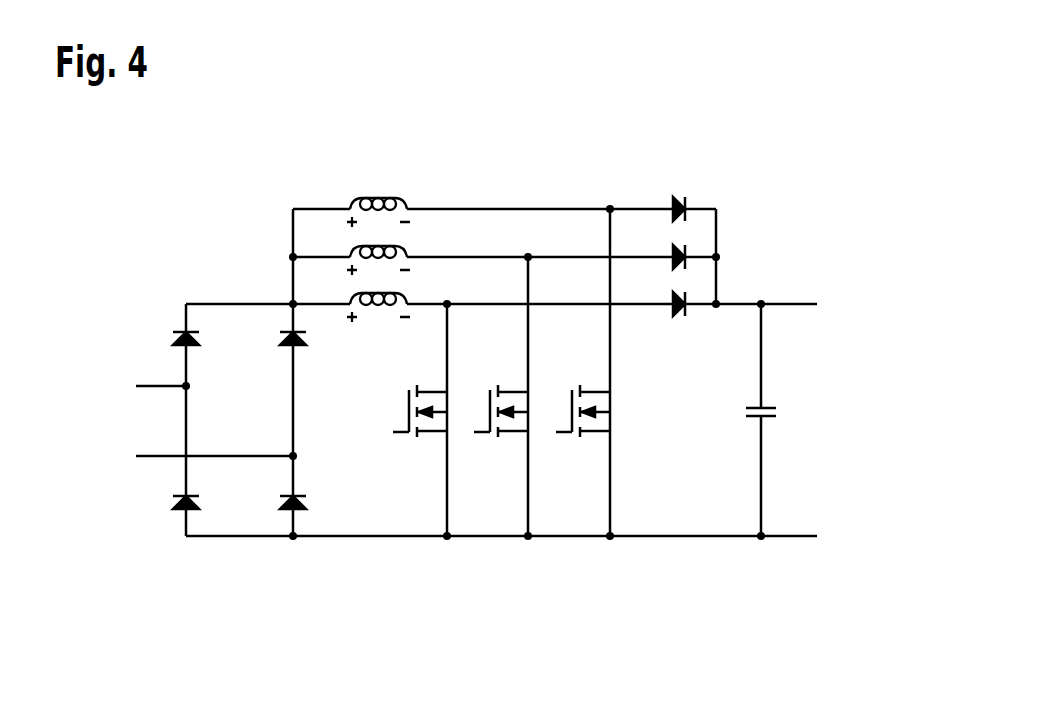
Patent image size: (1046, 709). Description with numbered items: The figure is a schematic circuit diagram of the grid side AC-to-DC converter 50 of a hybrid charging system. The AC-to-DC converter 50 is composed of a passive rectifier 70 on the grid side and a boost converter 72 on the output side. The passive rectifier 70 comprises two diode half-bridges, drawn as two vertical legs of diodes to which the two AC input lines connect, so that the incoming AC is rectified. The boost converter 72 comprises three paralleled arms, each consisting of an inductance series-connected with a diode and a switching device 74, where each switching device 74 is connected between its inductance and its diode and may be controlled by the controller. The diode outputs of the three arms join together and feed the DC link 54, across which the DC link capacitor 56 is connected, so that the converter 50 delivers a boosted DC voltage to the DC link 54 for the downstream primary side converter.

The grid side AC-to-DC converter 50 is at (316, 170).
The DC link 54 is at (772, 231).
The DC link capacitor 56 is at (758, 418).
The passive rectifier 70 is at (241, 563).
The boost converter 72 is at (535, 476).
The switching device 74 is at (430, 432).